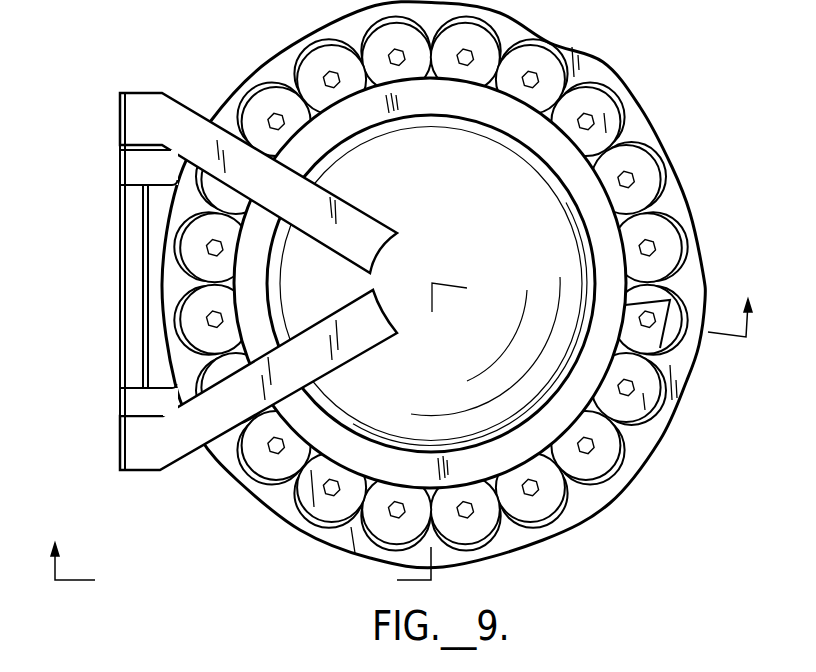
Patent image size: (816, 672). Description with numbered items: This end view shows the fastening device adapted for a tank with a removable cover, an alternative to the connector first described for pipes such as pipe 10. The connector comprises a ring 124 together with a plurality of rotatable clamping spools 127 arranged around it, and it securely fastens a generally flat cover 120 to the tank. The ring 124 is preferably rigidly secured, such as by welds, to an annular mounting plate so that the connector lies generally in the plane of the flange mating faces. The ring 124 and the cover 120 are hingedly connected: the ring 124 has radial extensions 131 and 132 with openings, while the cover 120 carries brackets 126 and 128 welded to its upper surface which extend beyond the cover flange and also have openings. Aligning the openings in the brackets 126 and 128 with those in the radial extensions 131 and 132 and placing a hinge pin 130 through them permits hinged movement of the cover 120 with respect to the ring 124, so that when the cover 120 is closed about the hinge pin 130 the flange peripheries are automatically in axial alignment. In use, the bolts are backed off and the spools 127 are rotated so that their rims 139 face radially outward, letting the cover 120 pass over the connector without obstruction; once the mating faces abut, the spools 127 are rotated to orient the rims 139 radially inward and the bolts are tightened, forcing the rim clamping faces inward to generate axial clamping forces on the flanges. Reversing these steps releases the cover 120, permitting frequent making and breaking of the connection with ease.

The pipe 10 is at (409, 429).
The cover 120 is at (497, 410).
The ring 124 is at (668, 209).
The bracket 126 is at (190, 123).
The rotatable clamping spool 127 is at (640, 163).
The bracket 128 is at (200, 417).
The hinge pin 130 is at (133, 274).
The radial extension 131 is at (143, 398).
The radial extension 132 is at (133, 165).
The rim 139 is at (655, 401).